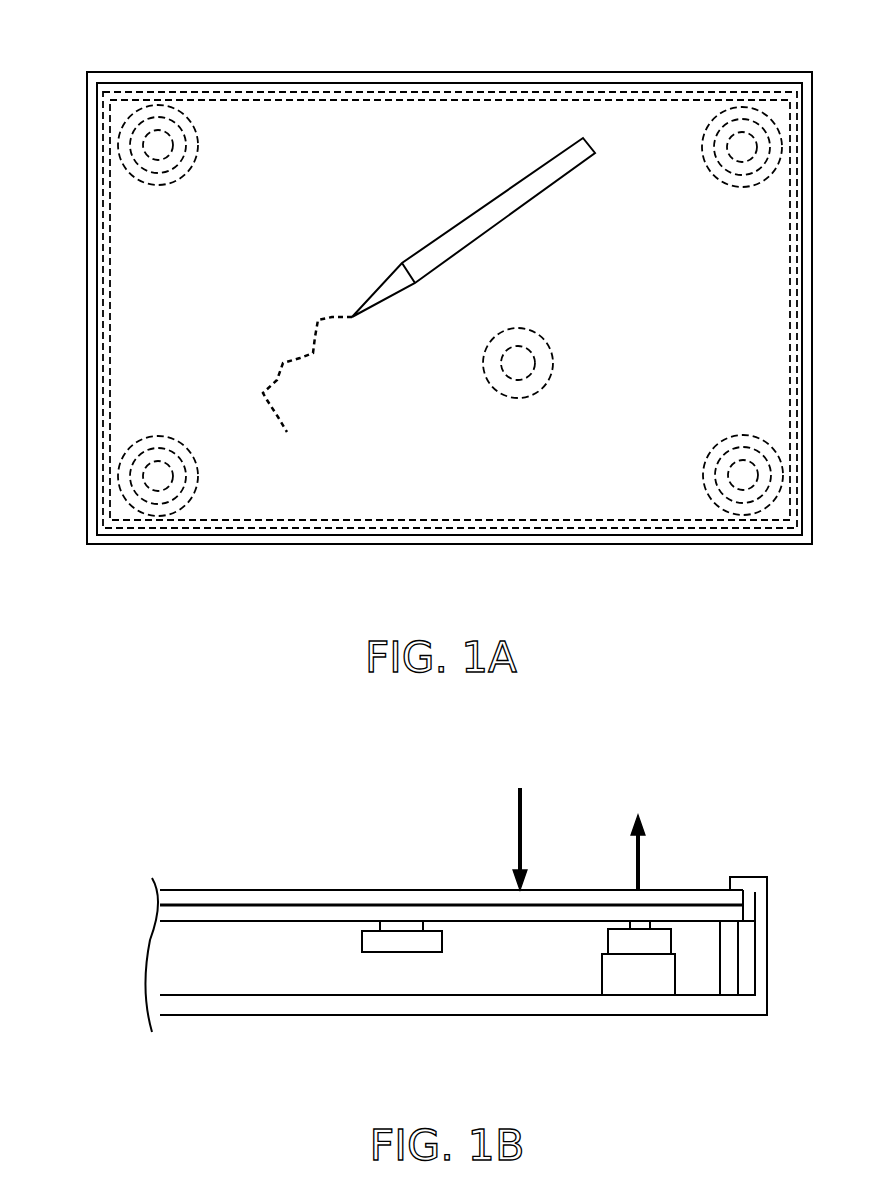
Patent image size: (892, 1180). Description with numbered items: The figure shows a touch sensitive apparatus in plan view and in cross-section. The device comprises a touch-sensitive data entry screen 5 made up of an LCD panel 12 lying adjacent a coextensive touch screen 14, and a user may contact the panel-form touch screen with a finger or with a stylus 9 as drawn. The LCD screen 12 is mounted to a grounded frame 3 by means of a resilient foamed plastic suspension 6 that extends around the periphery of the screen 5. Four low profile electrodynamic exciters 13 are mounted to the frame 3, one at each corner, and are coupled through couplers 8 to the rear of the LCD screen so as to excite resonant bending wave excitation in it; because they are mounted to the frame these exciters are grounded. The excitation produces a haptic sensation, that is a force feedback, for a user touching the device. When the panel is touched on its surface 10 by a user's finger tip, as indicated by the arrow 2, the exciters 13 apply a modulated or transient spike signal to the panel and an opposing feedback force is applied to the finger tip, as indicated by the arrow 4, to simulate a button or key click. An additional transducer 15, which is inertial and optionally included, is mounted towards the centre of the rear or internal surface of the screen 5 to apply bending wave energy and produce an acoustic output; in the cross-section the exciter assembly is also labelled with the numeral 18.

In FIG. 1B, the arrow 2 is at (520, 824).
In FIG. 1A, the grounded frame 3 is at (373, 542).
In FIG. 1B, the arrow 4 is at (637, 840).
In FIG. 1B, the touch-sensitive data entry screen 5 is at (247, 923).
In FIG. 1A, the resilient foamed plastic suspension 6 is at (110, 313).
In FIG. 1B, the resilient foamed plastic suspension 6 is at (727, 958).
In FIG. 1A, the couplers 8 is at (730, 475).
In FIG. 1A, the stylus 9 is at (398, 280).
In FIG. 1A, the surface 10 is at (282, 490).
In FIG. 1B, the surface 10 is at (312, 890).
In FIG. 1B, the LCD panel 12 is at (293, 912).
In FIG. 1A, the low profile electrodynamic exciters 13 is at (197, 138).
In FIG. 1B, the low profile electrodynamic exciters 13 is at (593, 980).
In FIG. 1B, the touch screen 14 is at (393, 898).
In FIG. 1A, the additional transducer 15 is at (527, 328).
In FIG. 1B, the additional transducer 15 is at (402, 953).
In FIG. 1B, the sensor element 18 is at (607, 940).